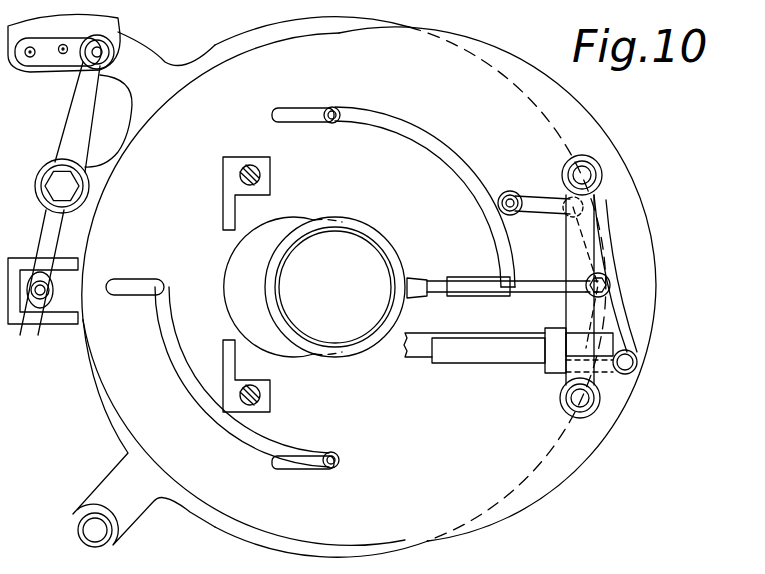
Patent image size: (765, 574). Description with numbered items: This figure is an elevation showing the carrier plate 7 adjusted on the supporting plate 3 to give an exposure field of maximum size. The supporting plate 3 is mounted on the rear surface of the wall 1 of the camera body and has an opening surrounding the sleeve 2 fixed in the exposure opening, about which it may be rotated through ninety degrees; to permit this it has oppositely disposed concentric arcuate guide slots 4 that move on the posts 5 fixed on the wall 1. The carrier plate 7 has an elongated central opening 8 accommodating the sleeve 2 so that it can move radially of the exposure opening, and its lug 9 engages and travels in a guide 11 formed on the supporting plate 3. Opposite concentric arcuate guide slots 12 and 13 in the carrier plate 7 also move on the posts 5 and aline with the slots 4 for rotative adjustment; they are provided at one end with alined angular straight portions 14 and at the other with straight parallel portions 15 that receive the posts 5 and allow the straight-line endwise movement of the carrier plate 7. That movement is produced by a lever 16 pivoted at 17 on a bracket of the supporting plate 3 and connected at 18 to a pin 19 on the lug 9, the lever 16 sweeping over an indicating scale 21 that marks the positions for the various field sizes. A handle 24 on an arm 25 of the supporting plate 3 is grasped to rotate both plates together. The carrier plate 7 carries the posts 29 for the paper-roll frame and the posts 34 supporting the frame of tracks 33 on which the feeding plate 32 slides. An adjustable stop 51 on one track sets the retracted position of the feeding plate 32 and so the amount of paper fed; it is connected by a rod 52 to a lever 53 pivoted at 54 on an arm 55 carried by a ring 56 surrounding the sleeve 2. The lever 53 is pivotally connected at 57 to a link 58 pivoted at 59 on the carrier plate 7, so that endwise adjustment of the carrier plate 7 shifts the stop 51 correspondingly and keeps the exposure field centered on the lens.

The wall of a camera body 1 is at (64, 42).
The sleeve 2 is at (316, 232).
The supporting plate 3 is at (100, 405).
The arcuate guide slots 4 is at (296, 458).
The posts 5 is at (336, 110).
The carrier plate 7 is at (572, 466).
The elongated central opening 8 is at (270, 228).
The lug 9 is at (18, 306).
The guide 11 is at (20, 262).
The arcuate guide slot 12 is at (444, 150).
The arcuate guide slot 13 is at (172, 352).
The angular straight portions 14 is at (136, 279).
The straight parallel portions 15 is at (298, 108).
The lever 16 is at (82, 108).
The pivot 17 is at (46, 180).
The connection 18 is at (44, 312).
The pin 19 is at (50, 286).
The indicating scale 21 is at (140, 55).
The handle 24 is at (108, 536).
The arm 25 is at (142, 513).
The posts 29 is at (272, 172).
The feeding plate 32 is at (466, 360).
The tracks 33 is at (436, 337).
The posts 34 is at (581, 165).
The adjustable stop 51 is at (548, 356).
The rod 52 is at (606, 368).
The lever 53 is at (616, 326).
The pivot 54 is at (608, 280).
The arm 55 is at (530, 280).
The ring 56 is at (416, 272).
The pivotal connection 57 is at (597, 212).
The link 58 is at (538, 196).
The pivot 59 is at (510, 190).